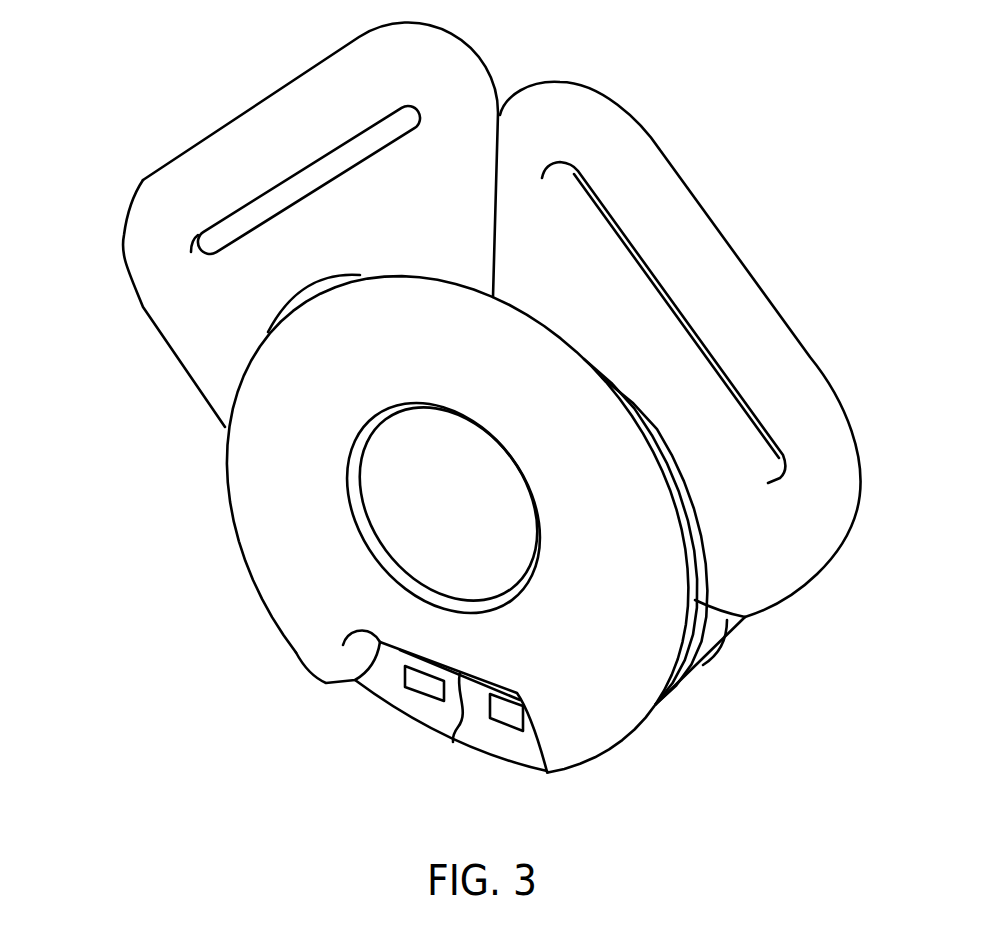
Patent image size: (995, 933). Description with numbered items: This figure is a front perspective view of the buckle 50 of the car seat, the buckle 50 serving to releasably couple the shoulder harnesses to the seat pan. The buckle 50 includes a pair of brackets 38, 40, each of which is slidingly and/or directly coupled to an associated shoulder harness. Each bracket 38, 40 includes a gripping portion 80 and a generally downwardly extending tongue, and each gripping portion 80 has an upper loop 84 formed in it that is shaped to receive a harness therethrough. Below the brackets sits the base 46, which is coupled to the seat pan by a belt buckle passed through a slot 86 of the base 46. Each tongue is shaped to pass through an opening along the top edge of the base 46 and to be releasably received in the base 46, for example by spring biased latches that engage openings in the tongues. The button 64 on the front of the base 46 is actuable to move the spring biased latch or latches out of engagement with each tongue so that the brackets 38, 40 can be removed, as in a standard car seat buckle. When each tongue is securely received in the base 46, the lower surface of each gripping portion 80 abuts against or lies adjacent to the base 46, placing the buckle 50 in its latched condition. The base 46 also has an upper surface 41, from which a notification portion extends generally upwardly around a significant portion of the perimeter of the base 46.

The bracket 38 is at (838, 514).
The bracket 40 is at (182, 324).
The upper surface 41 is at (540, 323).
The base 46 is at (303, 598).
The buckle 50 is at (148, 489).
The button 64 is at (390, 495).
The gripping portion 80 is at (290, 103).
The upper loop 84 is at (360, 163).
The slot 86 is at (451, 742).